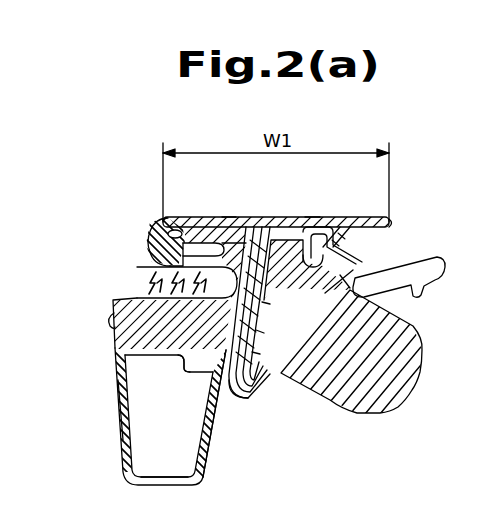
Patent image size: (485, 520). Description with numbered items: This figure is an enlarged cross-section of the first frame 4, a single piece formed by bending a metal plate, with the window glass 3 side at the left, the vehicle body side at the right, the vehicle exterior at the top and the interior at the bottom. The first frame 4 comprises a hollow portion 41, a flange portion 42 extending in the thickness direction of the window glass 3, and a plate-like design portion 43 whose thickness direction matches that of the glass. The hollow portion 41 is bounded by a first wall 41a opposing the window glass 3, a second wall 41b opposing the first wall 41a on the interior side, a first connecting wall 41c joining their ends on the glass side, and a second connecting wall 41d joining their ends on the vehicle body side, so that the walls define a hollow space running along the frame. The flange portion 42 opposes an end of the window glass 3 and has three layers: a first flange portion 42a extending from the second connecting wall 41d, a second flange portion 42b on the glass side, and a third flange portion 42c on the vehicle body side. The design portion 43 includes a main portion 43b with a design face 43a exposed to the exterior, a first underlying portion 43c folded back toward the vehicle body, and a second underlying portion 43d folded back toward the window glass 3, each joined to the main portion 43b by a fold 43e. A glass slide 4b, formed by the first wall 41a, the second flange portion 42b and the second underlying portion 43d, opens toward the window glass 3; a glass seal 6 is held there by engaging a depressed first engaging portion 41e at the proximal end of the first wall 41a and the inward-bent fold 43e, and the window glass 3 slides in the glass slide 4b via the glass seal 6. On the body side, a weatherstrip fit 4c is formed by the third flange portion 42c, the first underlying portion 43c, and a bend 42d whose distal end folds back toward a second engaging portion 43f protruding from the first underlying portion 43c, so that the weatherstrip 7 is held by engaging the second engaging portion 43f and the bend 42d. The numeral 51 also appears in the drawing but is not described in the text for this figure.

The window glass 3 is at (137, 283).
The first frame 4 is at (348, 440).
The glass slide 4b is at (123, 323).
The weatherstrip fit 4c is at (242, 260).
The glass seal 6 is at (152, 241).
The weatherstrip 7 is at (420, 320).
The hollow portion 41 is at (213, 485).
The first wall 41a is at (153, 356).
The second wall 41b is at (175, 482).
The first connecting wall 41c is at (118, 427).
The second connecting wall 41d is at (215, 437).
The first engaging portion 41e is at (189, 373).
The flange portion 42 is at (270, 288).
The first flange portion 42a is at (260, 304).
The second flange portion 42b is at (255, 330).
The third flange portion 42c is at (250, 352).
The bend 42d is at (249, 400).
The design portion 43 is at (352, 217).
The design face 43a is at (229, 217).
The main portion 43b is at (312, 217).
The first underlying portion 43c is at (380, 238).
The second underlying portion 43d is at (188, 217).
The fold 43e is at (166, 218).
The second engaging portion 43f is at (340, 283).
The mating member 51 is at (469, 424).